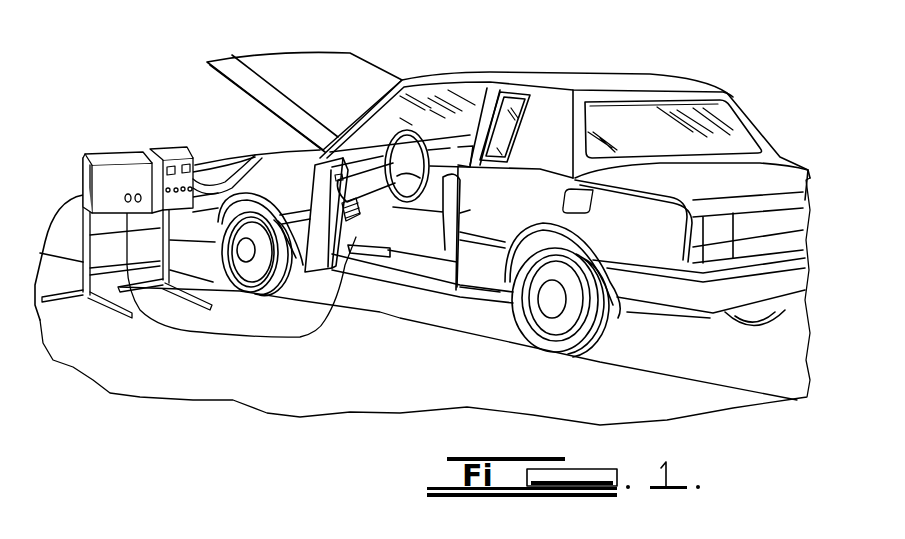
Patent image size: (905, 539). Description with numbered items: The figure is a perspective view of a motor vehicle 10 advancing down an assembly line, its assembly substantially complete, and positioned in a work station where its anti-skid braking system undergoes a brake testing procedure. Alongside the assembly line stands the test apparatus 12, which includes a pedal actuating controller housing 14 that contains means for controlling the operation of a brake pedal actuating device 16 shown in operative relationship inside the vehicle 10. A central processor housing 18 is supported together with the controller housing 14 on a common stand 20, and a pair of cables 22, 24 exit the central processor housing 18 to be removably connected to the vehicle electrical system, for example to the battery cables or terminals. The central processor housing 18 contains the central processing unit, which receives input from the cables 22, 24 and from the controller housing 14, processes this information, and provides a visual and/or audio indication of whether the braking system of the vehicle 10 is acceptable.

The motor vehicle 10 is at (644, 50).
The test apparatus 12 is at (131, 118).
The pedal actuating controller housing 14 is at (112, 160).
The brake pedal actuating device 16 is at (350, 231).
The central processor housing 18 is at (170, 148).
The common stand 20 is at (92, 308).
The cable 22 is at (208, 178).
The cable 24 is at (238, 170).